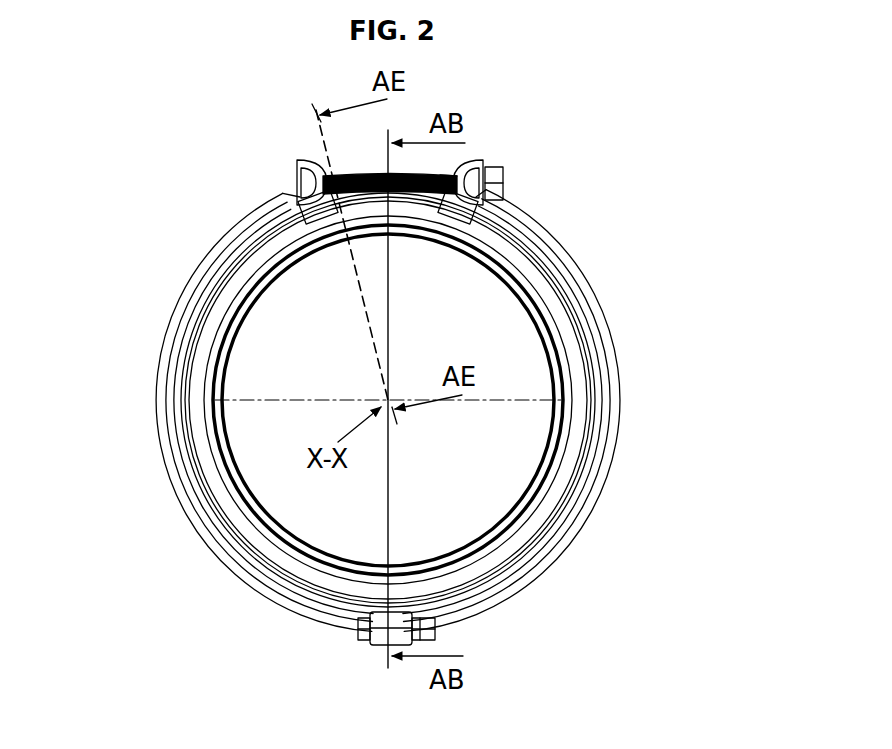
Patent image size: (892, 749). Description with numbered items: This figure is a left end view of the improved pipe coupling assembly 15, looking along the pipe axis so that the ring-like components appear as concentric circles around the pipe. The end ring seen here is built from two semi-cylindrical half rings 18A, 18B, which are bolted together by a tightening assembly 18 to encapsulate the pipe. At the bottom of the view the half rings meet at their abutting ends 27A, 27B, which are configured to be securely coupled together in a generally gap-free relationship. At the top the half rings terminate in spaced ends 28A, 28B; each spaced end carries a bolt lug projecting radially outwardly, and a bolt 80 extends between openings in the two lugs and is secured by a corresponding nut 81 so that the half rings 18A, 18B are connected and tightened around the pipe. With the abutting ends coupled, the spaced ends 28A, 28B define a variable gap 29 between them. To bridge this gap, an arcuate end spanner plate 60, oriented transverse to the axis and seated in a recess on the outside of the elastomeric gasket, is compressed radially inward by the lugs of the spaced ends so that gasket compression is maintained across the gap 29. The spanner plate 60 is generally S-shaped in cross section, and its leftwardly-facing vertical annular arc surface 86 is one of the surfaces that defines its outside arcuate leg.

The pipe coupling assembly 15 is at (660, 253).
The tightening assembly 18 is at (281, 156).
The semi-cylindrical half ring 18A is at (158, 471).
The semi-cylindrical half ring 18B is at (615, 503).
The spaced end 28A is at (299, 156).
The spaced end 28B is at (479, 158).
The variable gap 29 is at (453, 166).
The bolt 80 is at (363, 172).
The nut 81 is at (506, 162).
The leftwardly-facing vertical annular arc surface 86 is at (377, 207).
The end spanner plate 60 is at (417, 210).
The abutting end 27A is at (377, 650).
The abutting end 27B is at (409, 670).